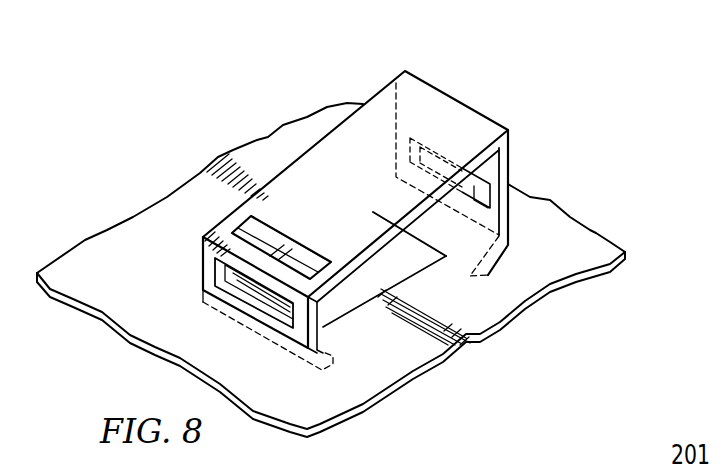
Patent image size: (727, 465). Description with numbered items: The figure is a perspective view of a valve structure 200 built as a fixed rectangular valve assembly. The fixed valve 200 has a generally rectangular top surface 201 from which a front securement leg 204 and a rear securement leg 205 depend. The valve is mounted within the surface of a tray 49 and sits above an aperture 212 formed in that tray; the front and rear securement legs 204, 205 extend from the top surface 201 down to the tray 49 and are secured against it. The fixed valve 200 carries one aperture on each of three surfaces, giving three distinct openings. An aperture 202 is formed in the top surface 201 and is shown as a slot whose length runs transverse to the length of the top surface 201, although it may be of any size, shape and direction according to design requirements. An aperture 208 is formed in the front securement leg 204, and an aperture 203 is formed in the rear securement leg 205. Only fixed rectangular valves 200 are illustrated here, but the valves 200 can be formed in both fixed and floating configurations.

The tray 49 is at (100, 252).
The valve structure 200 is at (285, 95).
The top surface 201 is at (451, 118).
The aperture 202 is at (267, 243).
The aperture 203 is at (255, 292).
The front securement leg 204 is at (509, 176).
The rear securement leg 205 is at (203, 268).
The aperture 208 is at (478, 188).
The aperture 212 is at (402, 264).